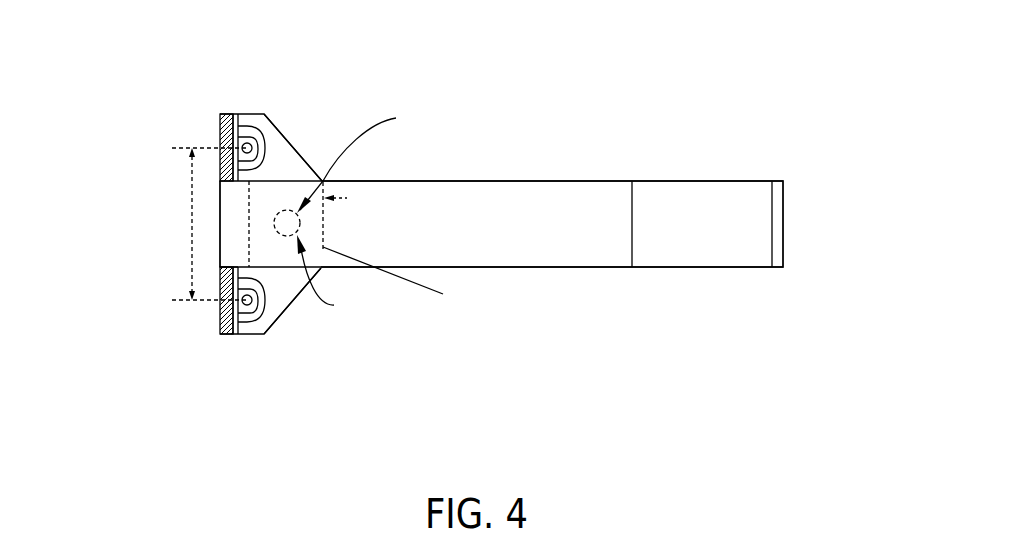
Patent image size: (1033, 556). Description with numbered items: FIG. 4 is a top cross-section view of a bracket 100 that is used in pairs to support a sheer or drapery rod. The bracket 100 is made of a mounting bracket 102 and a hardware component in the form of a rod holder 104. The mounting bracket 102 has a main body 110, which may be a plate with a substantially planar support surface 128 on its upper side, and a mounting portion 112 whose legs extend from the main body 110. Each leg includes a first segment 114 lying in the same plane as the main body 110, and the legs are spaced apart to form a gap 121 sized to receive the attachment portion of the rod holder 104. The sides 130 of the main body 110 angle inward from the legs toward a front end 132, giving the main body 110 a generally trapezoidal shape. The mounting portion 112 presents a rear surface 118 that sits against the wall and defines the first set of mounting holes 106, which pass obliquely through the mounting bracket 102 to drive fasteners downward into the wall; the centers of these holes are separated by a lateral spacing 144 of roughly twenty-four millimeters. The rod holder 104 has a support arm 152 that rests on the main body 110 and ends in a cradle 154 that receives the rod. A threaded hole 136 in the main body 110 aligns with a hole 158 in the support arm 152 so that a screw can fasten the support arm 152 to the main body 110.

The bracket 100 is at (719, 78).
The mounting bracket 102 is at (292, 140).
The rod holder 104 is at (596, 268).
The first set of mounting holes 106 is at (247, 142).
The main body 110 is at (280, 157).
The mounting portion 112 is at (221, 264).
The first segment 114 is at (323, 247).
The rear surface 118 is at (220, 118).
The gap 121 is at (240, 258).
The support surface 128 is at (270, 312).
The sides 130 is at (322, 180).
The front end 132 is at (403, 278).
The threaded hole 136 is at (327, 182).
The lateral spacing 144 is at (192, 190).
The support arm 152 is at (537, 268).
The cradle 154 is at (727, 268).
The hole 158 is at (290, 237).